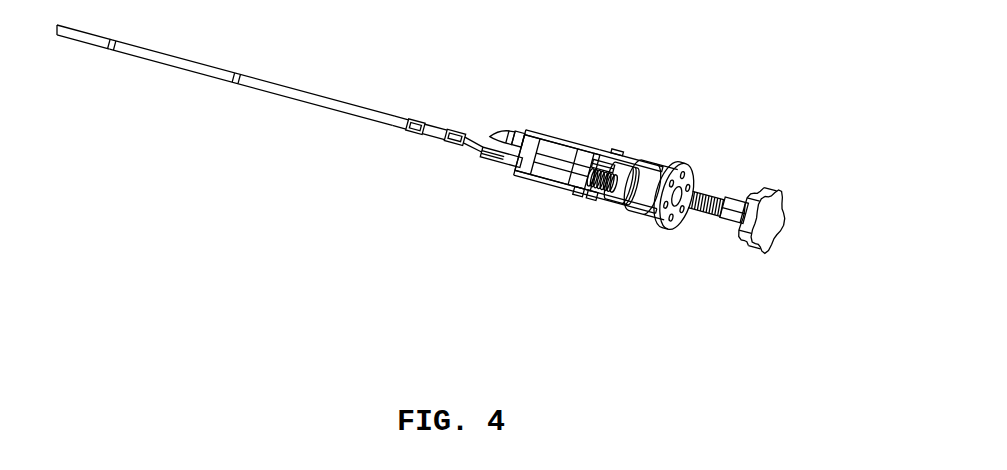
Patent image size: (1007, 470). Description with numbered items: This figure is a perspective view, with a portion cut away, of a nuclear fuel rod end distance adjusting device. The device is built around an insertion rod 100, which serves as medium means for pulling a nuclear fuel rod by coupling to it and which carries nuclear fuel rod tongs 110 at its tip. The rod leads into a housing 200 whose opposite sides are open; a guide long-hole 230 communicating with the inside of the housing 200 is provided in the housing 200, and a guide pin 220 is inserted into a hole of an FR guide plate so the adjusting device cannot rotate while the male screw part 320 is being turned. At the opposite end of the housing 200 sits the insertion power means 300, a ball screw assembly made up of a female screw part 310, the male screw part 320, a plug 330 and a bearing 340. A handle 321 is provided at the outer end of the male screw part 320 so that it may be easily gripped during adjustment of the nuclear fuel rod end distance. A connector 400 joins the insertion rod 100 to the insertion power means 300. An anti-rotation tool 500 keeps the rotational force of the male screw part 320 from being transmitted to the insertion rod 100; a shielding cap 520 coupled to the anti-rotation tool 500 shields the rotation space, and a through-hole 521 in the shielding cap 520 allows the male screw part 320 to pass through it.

The insertion rod 100 is at (224, 70).
The nuclear fuel rod tongs 110 is at (85, 41).
The housing 200 is at (662, 158).
The guide pin 220 is at (503, 130).
The guide long-hole 230 is at (552, 133).
The insertion power means 300 is at (693, 303).
The female screw part 310 is at (630, 203).
The male screw part 320 is at (705, 212).
The handle 321 is at (775, 213).
The plug 330 is at (578, 197).
The bearing 340 is at (593, 197).
The connector 400 is at (435, 137).
The anti-rotation tool 500 is at (595, 150).
The shielding cap 520 is at (650, 160).
The through-hole 521 is at (612, 163).